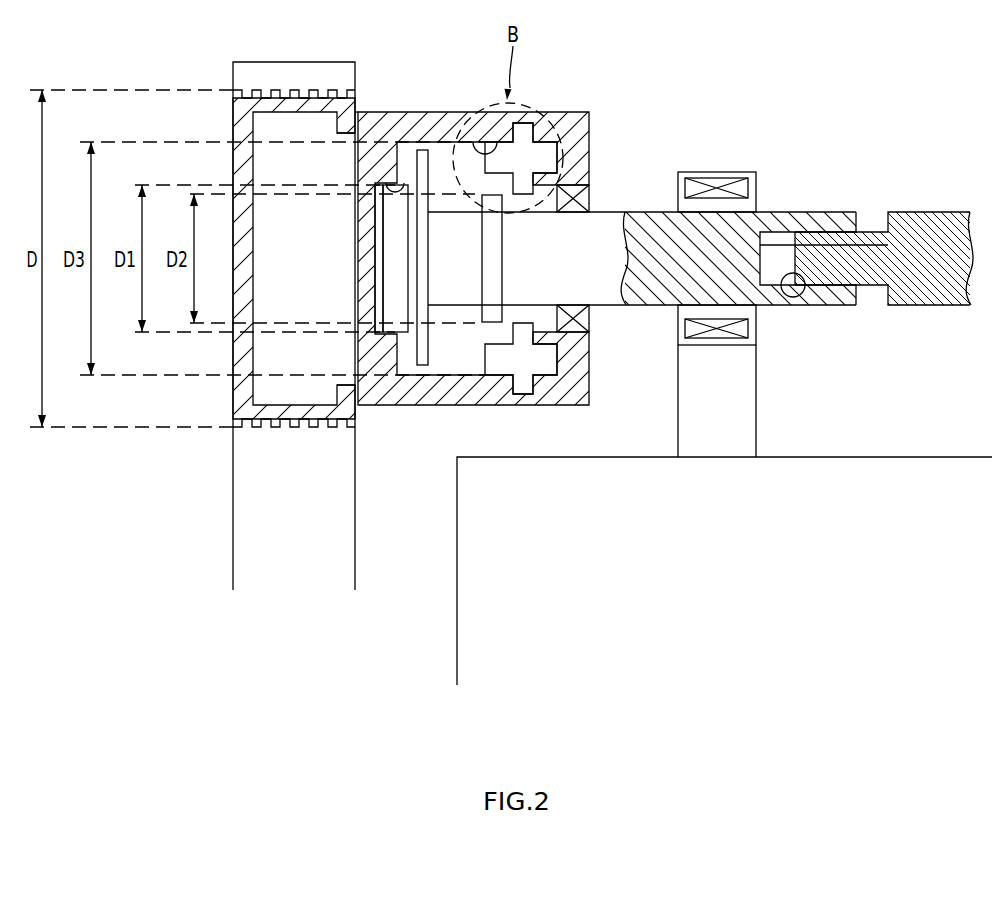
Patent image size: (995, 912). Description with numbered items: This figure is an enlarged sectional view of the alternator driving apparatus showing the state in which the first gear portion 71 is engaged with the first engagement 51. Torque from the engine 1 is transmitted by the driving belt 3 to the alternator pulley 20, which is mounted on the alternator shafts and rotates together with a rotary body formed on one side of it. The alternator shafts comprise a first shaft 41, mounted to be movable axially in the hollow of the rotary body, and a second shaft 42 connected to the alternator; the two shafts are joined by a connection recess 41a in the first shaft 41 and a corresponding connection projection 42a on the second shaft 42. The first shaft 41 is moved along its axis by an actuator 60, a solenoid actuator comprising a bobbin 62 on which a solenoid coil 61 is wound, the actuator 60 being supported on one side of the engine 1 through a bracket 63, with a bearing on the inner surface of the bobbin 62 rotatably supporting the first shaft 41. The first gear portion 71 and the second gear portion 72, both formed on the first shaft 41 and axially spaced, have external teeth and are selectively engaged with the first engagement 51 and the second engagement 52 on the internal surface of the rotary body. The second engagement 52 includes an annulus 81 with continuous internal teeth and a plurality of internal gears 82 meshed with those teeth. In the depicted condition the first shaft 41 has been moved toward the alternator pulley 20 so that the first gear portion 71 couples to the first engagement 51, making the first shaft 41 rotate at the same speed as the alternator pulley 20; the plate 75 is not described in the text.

The engine 1 is at (468, 647).
The driving belt 3 is at (247, 556).
The alternator pulley 20 is at (240, 352).
The first shaft 41 is at (615, 293).
The connection recess 41a is at (797, 297).
The second shaft 42 is at (925, 297).
The connection projection 42a is at (870, 253).
The first engagement 51 is at (400, 180).
The second engagement 52 is at (527, 101).
The actuator 60 is at (748, 272).
The solenoid coil 61 is at (743, 185).
The bobbin 62 is at (707, 172).
The bracket 63 is at (748, 403).
The first gear portion 71 is at (407, 313).
The second gear portion 72 is at (493, 313).
The clutch disc 75 is at (422, 150).
The annulus 81 is at (472, 138).
The internal gears 82 is at (523, 167).